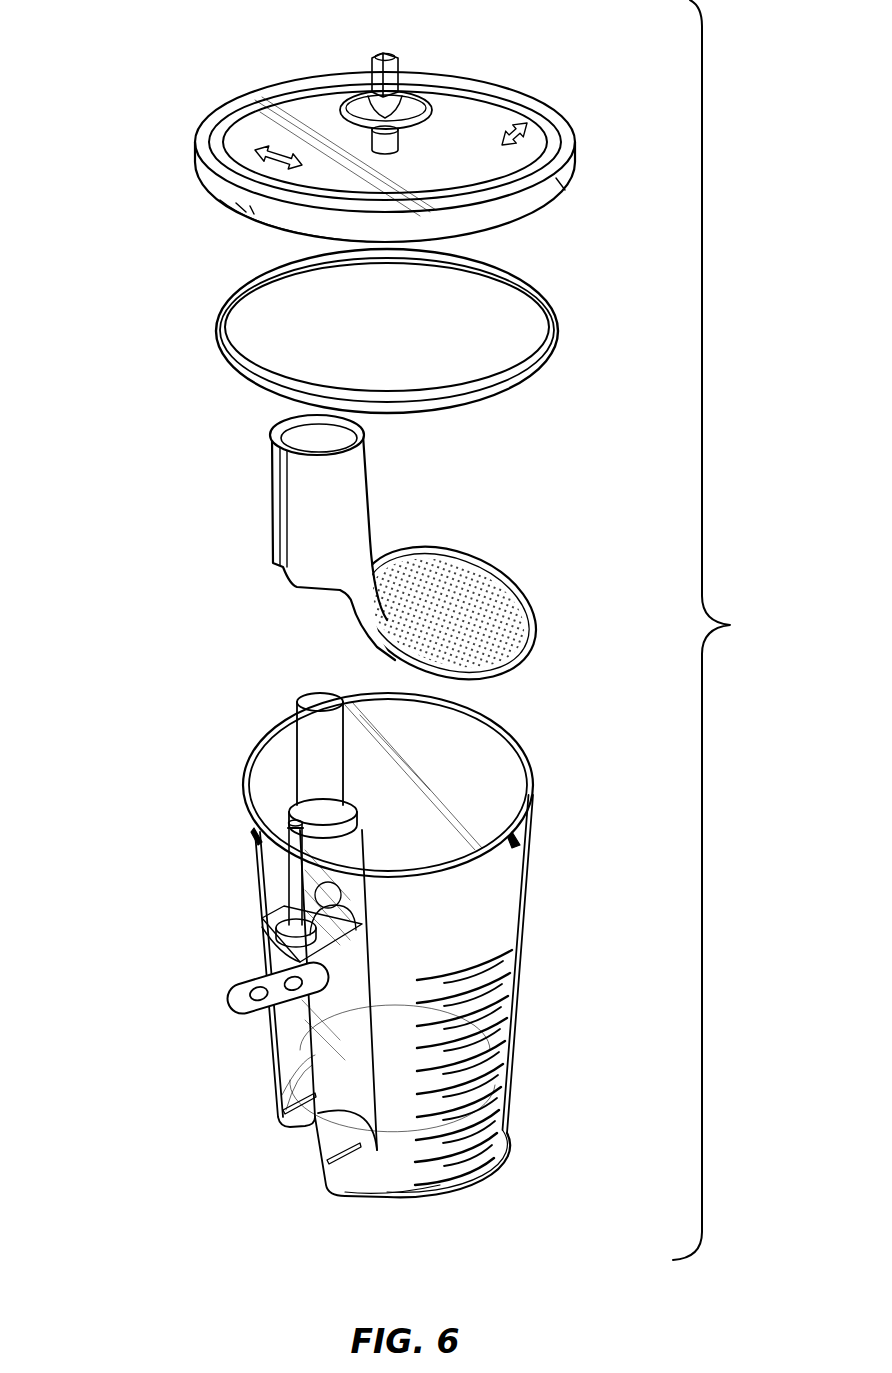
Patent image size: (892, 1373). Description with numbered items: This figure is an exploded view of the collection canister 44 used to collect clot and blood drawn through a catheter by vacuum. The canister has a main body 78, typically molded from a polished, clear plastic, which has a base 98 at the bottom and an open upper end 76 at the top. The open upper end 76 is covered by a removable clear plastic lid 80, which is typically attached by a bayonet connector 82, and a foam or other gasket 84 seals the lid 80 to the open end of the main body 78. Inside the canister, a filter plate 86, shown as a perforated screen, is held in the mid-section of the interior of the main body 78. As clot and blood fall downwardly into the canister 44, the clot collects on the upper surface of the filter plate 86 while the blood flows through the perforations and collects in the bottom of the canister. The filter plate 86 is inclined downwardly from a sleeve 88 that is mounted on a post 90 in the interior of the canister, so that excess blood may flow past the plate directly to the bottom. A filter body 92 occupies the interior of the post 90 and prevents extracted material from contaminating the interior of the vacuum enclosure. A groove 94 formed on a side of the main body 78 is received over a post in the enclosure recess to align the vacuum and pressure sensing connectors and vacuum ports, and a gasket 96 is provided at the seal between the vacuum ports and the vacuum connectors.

The collection canister 44 is at (724, 630).
The open upper end 76 is at (487, 780).
The main body 78 is at (480, 1000).
The removable clear plastic lid 80 is at (484, 96).
The bayonet connector 82 is at (256, 832).
The gasket 84 is at (214, 335).
The filter plate 86 is at (493, 612).
The sleeve 88 is at (278, 558).
The post 90 is at (360, 826).
The filter body 92 is at (292, 736).
The groove 94 is at (295, 1053).
The gasket 96 is at (240, 993).
The base 98 is at (421, 1192).